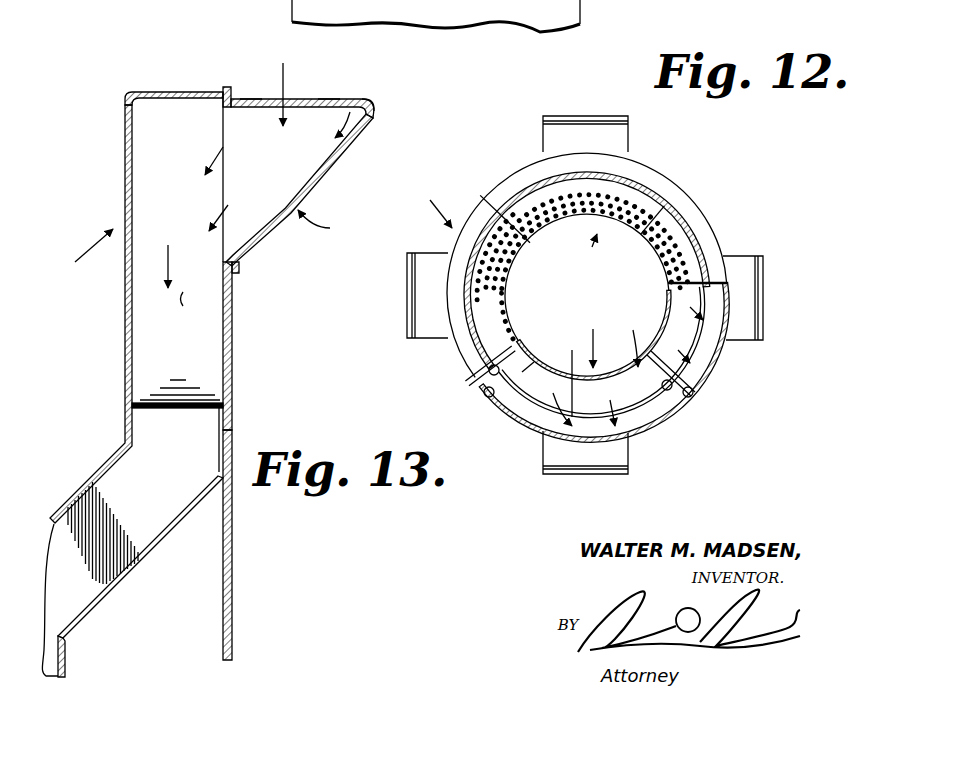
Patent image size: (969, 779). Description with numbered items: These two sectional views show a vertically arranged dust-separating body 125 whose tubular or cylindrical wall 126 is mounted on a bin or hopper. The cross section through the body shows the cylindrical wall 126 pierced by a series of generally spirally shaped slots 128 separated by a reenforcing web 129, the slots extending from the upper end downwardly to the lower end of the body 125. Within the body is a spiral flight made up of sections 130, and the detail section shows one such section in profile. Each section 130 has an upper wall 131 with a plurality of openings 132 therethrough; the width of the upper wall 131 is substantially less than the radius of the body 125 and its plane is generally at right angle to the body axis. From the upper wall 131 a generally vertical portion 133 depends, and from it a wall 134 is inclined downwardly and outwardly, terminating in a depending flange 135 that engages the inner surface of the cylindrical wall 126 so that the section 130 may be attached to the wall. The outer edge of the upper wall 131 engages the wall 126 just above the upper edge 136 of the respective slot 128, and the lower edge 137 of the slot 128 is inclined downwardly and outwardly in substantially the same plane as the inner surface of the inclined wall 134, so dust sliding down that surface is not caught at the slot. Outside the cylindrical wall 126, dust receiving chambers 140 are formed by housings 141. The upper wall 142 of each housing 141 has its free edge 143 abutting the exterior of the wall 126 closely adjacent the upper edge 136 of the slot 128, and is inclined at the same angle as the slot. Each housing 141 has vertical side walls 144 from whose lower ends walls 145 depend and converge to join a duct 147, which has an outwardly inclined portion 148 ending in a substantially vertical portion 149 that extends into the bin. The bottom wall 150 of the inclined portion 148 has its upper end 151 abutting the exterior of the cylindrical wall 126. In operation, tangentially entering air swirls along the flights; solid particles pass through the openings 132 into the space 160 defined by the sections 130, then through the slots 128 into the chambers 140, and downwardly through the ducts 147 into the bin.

In FIG. 12, the body 125 is at (654, 171).
In FIG. 13, the cylindrical wall 126 is at (237, 444).
In FIG. 12, the cylindrical wall 126 is at (688, 240).
In FIG. 13, the slots 128 is at (222, 147).
In FIG. 12, the slots 128 is at (558, 441).
In FIG. 12, the reenforcing web 129 is at (496, 372).
In FIG. 13, the spiral flight section 130 is at (331, 224).
In FIG. 12, the spiral flight section 130 is at (580, 327).
In FIG. 13, the upper wall 131 is at (301, 99).
In FIG. 12, the upper wall 131 is at (690, 272).
In FIG. 13, the openings 132 is at (250, 99).
In FIG. 12, the openings 132 is at (670, 258).
In FIG. 13, the depending vertical portion 133 is at (377, 110).
In FIG. 12, the depending vertical portion 133 is at (648, 252).
In FIG. 13, the inclined wall 134 is at (339, 165).
In FIG. 12, the inclined wall 134 is at (527, 368).
In FIG. 13, the depending flange 135 is at (240, 273).
In FIG. 13, the upper edge of slot 136 is at (222, 110).
In FIG. 13, the lower edge of slot 137 is at (197, 277).
In FIG. 12, the lower edge of slot 137 is at (563, 371).
In FIG. 13, the dust receiving chambers 140 is at (141, 308).
In FIG. 12, the dust receiving chambers 140 is at (633, 439).
In FIG. 13, the housing 141 is at (77, 255).
In FIG. 12, the housing 141 is at (425, 203).
In FIG. 13, the upper wall of housing 142 is at (157, 92).
In FIG. 12, the upper wall of housing 142 is at (482, 212).
In FIG. 13, the free edge 143 is at (224, 90).
In FIG. 13, the vertical side walls 144 is at (147, 155).
In FIG. 12, the vertical side walls 144 is at (500, 395).
In FIG. 13, the depending walls 145 is at (165, 393).
In FIG. 12, the depending walls 145 is at (533, 421).
In FIG. 13, the duct 147 is at (92, 460).
In FIG. 12, the duct 147 is at (613, 120).
In FIG. 13, the outwardly inclined portion 148 is at (122, 590).
In FIG. 12, the outwardly inclined portion 148 is at (563, 126).
In FIG. 13, the vertical portion 149 is at (67, 670).
In FIG. 13, the bottom wall 150 is at (170, 531).
In FIG. 13, the upper end of bottom wall 151 is at (218, 474).
In FIG. 13, the space 160 is at (290, 166).
In FIG. 12, the space 160 is at (672, 333).